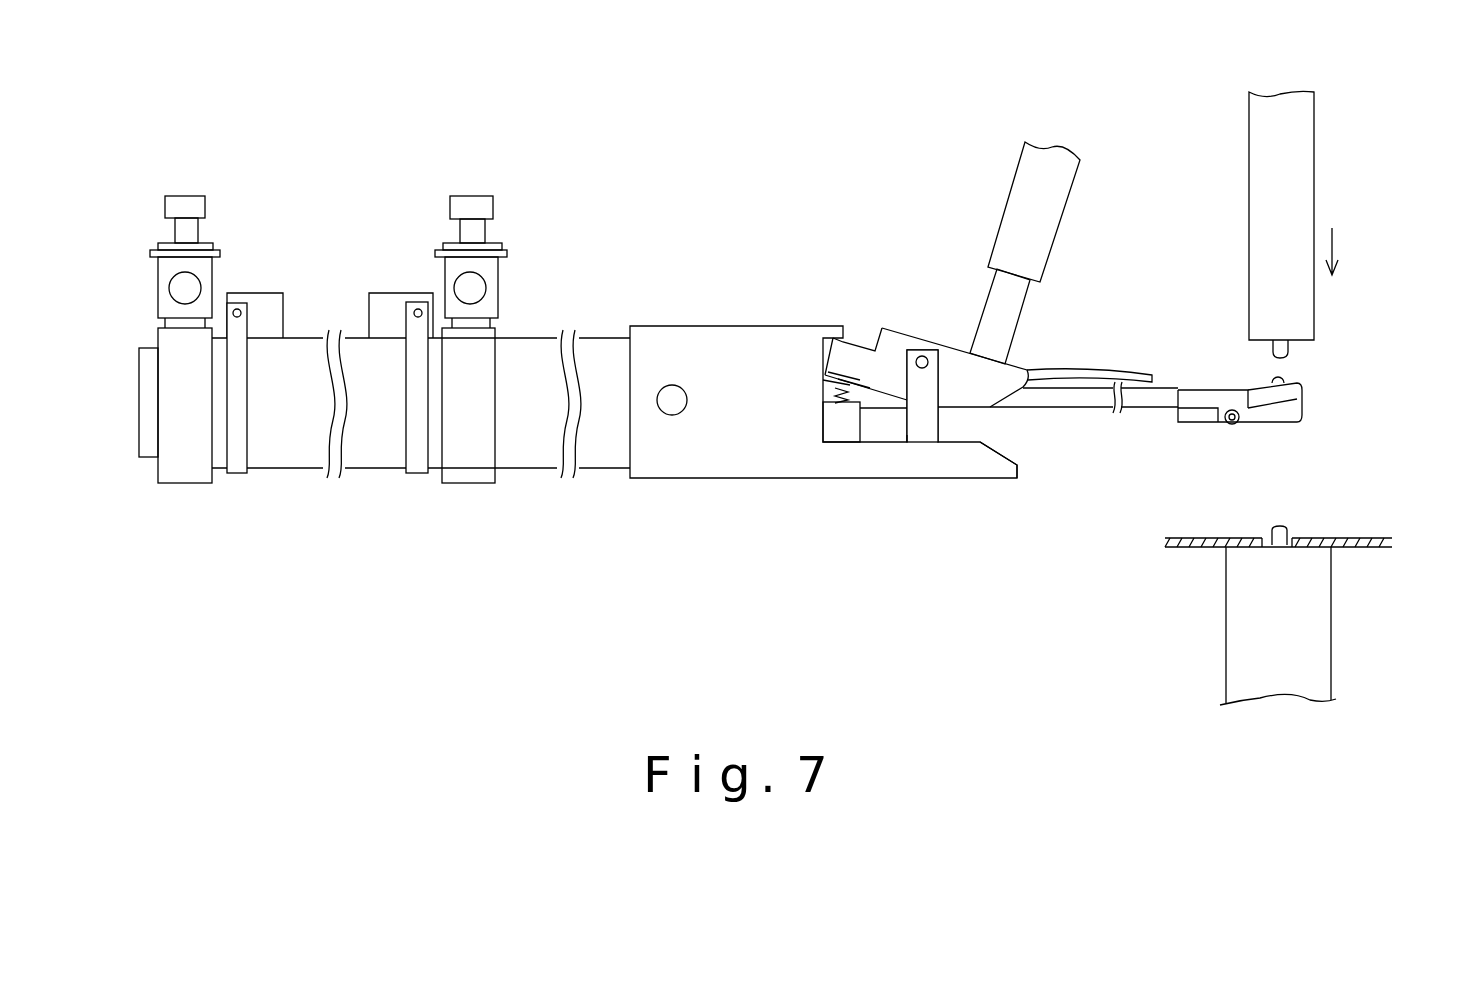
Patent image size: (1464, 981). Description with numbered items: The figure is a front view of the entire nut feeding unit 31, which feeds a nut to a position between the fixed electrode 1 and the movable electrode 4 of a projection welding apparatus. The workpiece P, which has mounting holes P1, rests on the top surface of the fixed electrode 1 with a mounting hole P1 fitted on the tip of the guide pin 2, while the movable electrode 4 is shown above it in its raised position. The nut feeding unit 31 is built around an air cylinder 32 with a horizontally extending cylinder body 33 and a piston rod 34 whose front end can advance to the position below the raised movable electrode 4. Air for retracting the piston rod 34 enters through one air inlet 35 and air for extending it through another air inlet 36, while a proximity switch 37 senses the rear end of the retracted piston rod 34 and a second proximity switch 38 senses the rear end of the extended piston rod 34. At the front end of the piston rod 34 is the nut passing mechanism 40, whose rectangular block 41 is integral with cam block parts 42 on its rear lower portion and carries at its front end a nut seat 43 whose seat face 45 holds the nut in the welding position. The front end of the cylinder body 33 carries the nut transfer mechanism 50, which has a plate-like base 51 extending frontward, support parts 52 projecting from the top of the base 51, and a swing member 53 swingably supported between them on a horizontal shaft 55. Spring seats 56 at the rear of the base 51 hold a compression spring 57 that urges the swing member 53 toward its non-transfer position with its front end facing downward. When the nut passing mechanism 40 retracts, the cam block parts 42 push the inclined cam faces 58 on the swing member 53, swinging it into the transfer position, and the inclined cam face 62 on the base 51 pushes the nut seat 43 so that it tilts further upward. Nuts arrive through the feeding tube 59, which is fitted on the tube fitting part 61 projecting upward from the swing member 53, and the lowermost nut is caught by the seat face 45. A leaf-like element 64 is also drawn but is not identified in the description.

The fixed electrode 1 is at (1335, 655).
The guide pin 2 is at (1287, 523).
The movable electrode 4 is at (1315, 147).
The workpiece P is at (1375, 547).
The mounting hole P1 is at (1268, 537).
The nut feeding unit 31 is at (727, 143).
The air cylinder 32 is at (370, 470).
The cylinder body 33 is at (278, 470).
The piston rod 34 is at (1058, 410).
The air inlet 35 is at (470, 196).
The air inlet 36 is at (188, 196).
The proximity switch 37 is at (255, 293).
The proximity switch 38 is at (388, 293).
The nut passing mechanism 40 is at (1308, 399).
The block 41 is at (1208, 388).
The cam block part 42 is at (1195, 424).
The nut seat 43 is at (1292, 424).
The seat face 45 is at (1297, 373).
The nut transfer mechanism 50 is at (909, 402).
The base 51 is at (918, 460).
The support part 52 is at (913, 442).
The swing member 53 is at (943, 346).
The horizontal shaft 55 is at (915, 357).
The spring seat 56 is at (810, 425).
The compression spring 57 is at (823, 383).
The inclined cam face 58 is at (980, 400).
The feeding tube 59 is at (1065, 200).
The tube fitting part 61 is at (1020, 318).
The inclined cam face 62 is at (1017, 455).
The leaf spring 64 is at (1082, 372).